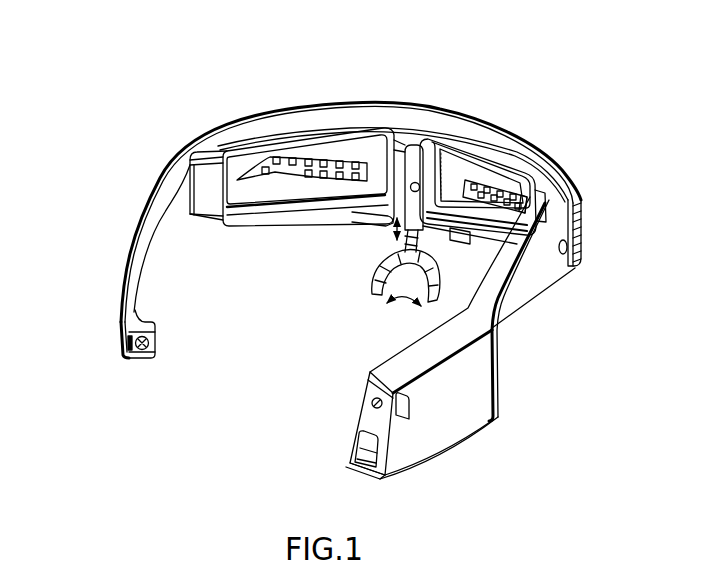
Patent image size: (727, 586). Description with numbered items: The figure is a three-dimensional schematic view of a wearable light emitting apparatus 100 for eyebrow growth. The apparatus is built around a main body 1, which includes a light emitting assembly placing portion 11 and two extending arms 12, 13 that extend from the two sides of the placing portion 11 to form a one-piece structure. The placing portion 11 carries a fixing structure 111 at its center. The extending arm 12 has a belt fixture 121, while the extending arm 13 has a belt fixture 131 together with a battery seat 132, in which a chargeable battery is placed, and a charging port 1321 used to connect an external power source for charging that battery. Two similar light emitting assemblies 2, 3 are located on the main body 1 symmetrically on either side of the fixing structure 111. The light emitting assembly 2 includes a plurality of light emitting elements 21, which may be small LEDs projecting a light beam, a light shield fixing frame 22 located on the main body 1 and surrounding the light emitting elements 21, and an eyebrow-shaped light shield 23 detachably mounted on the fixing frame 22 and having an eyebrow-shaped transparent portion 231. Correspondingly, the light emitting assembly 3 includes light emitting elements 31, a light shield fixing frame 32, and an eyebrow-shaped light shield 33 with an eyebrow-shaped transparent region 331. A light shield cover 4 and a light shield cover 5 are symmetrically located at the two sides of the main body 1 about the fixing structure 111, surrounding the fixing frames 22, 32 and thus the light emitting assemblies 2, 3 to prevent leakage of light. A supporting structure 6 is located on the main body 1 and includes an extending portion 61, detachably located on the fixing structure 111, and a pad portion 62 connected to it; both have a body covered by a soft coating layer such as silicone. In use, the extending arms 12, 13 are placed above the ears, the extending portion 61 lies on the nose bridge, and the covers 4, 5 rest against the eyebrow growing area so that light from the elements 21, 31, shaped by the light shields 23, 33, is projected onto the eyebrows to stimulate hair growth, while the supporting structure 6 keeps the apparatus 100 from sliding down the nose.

The wearable light emitting apparatus for eyebrow growth 100 is at (143, 137).
The main body 1 is at (207, 131).
The light emitting assembly placing portion 11 is at (275, 107).
The extending arm 12 is at (107, 280).
The belt fixture 121 is at (128, 360).
The extending arm 13 is at (527, 311).
The belt fixture 131 is at (360, 393).
The battery seat 132 is at (487, 431).
The charging port 1321 is at (362, 478).
The light emitting assembly 2 is at (309, 212).
The light emitting elements 21 is at (277, 156).
The light shield fixing frame 22 is at (260, 210).
The eyebrow-shaped light shield 23 is at (338, 147).
The eyebrow-shaped transparent portion 231 is at (302, 152).
The light emitting assembly 3 is at (498, 233).
The light emitting elements 31 is at (543, 170).
The light shield fixing frame 32 is at (457, 163).
The eyebrow-shaped light shield 33 is at (477, 170).
The eyebrow-shaped transparent region 331 is at (510, 193).
The light shield cover 4 is at (200, 185).
The light shield cover 5 is at (540, 185).
The supporting structure 6 is at (362, 297).
The extending portion 61 is at (437, 243).
The pad portion 62 is at (384, 294).
The fixing structure 111 is at (409, 145).